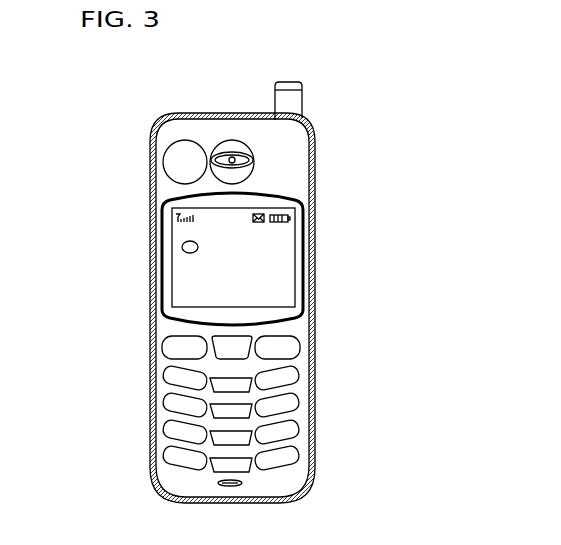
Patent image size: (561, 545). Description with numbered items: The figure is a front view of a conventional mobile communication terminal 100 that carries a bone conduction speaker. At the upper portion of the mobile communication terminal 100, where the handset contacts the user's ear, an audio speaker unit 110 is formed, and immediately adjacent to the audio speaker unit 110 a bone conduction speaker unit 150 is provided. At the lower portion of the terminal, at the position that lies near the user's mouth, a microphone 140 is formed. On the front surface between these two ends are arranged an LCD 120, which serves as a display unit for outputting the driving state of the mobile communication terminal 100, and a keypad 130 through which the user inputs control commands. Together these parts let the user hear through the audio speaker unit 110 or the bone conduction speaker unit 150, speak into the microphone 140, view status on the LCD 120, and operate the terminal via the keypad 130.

The mobile communication terminal 100 is at (247, 538).
The audio speaker unit 110 is at (236, 150).
The LCD 120 is at (283, 243).
The keypad 130 is at (295, 353).
The microphone 140 is at (217, 483).
The bone conduction speaker unit 150 is at (170, 142).